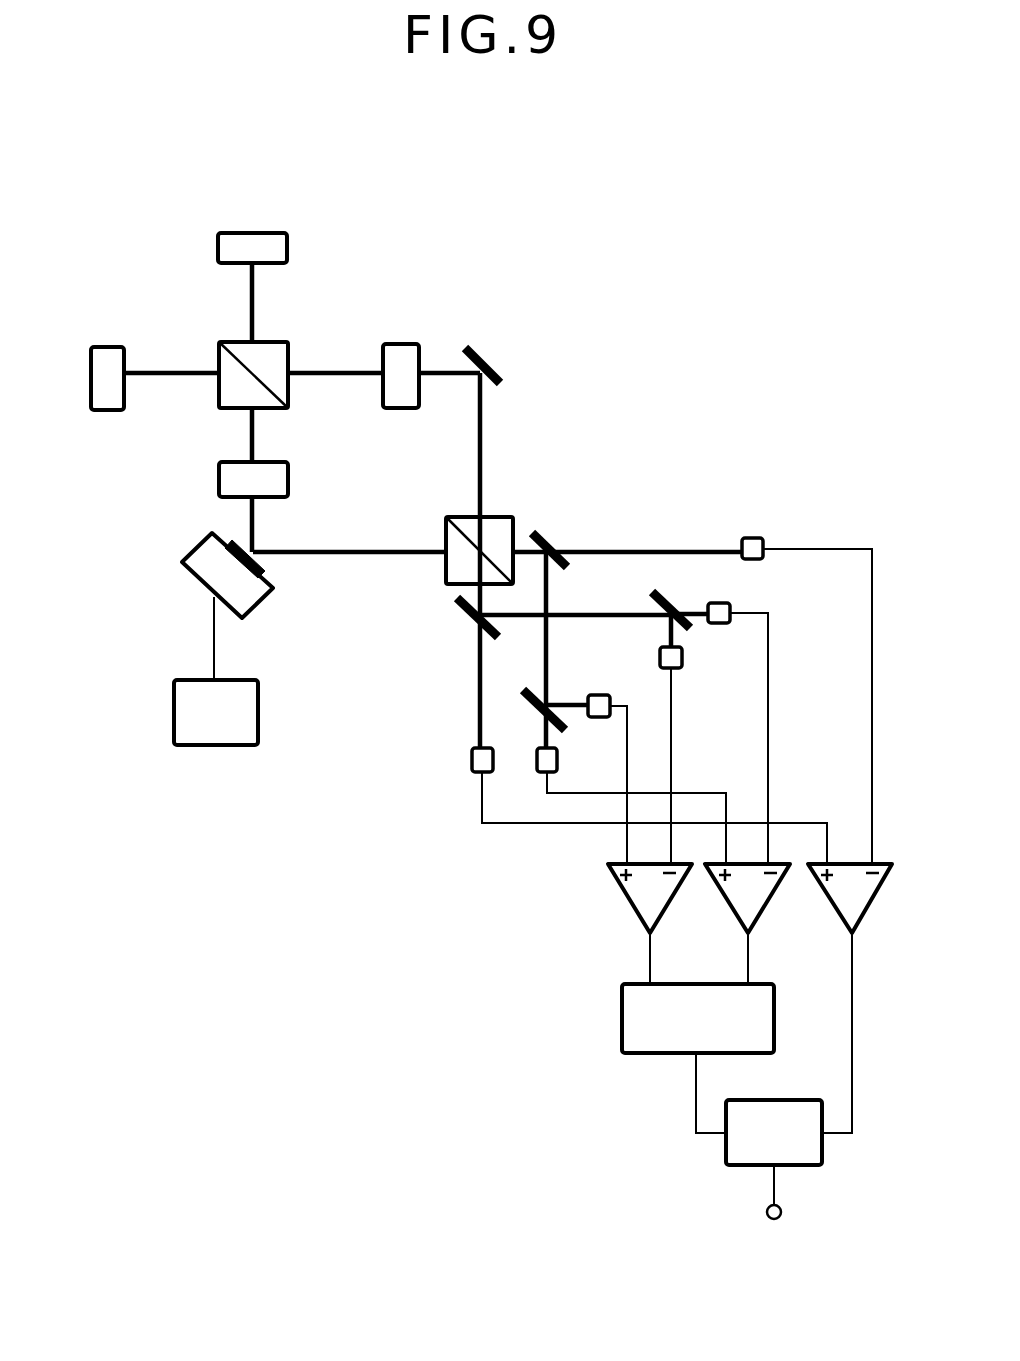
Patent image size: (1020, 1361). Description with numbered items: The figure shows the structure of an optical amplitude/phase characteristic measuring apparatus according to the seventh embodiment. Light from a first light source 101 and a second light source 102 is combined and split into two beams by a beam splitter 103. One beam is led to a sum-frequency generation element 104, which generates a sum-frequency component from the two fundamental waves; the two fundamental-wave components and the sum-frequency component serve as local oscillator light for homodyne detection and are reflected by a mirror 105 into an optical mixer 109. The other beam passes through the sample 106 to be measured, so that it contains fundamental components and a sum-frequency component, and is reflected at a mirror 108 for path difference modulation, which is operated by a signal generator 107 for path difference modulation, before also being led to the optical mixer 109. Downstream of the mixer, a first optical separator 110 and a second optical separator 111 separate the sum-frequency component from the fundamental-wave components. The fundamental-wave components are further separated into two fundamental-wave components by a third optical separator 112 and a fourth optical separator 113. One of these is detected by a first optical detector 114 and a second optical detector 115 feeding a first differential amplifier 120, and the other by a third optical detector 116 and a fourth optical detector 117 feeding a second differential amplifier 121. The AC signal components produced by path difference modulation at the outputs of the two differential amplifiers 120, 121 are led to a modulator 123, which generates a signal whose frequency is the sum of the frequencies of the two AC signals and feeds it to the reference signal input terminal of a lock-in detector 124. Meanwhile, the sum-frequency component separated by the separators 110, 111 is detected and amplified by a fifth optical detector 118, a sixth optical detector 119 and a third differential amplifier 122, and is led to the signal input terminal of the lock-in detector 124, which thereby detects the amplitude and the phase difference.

The first light source 101 is at (100, 372).
The second light source 102 is at (260, 242).
The beam splitter 103 is at (237, 348).
The sum-frequency generation element 104 is at (402, 355).
The mirror 105 is at (483, 355).
The sample to be measured 106 is at (230, 482).
The signal generator for path difference modulation 107 is at (200, 727).
The mirror for path difference modulation 108 is at (202, 567).
The optical mixer 109 is at (450, 540).
The first optical separator 110 is at (547, 532).
The second optical separator 111 is at (465, 605).
The third optical separator 112 is at (675, 604).
The fourth optical separator 113 is at (525, 703).
The first optical detector 114 is at (664, 660).
The second optical detector 115 is at (595, 702).
The third optical detector 116 is at (718, 612).
The fourth optical detector 117 is at (537, 765).
The fifth optical detector 118 is at (750, 543).
The sixth optical detector 119 is at (470, 758).
The first differential amplifier 120 is at (640, 898).
The second differential amplifier 121 is at (752, 898).
The third differential amplifier 122 is at (860, 893).
The modulator 123 is at (630, 1000).
The lock-in detector 124 is at (740, 1140).